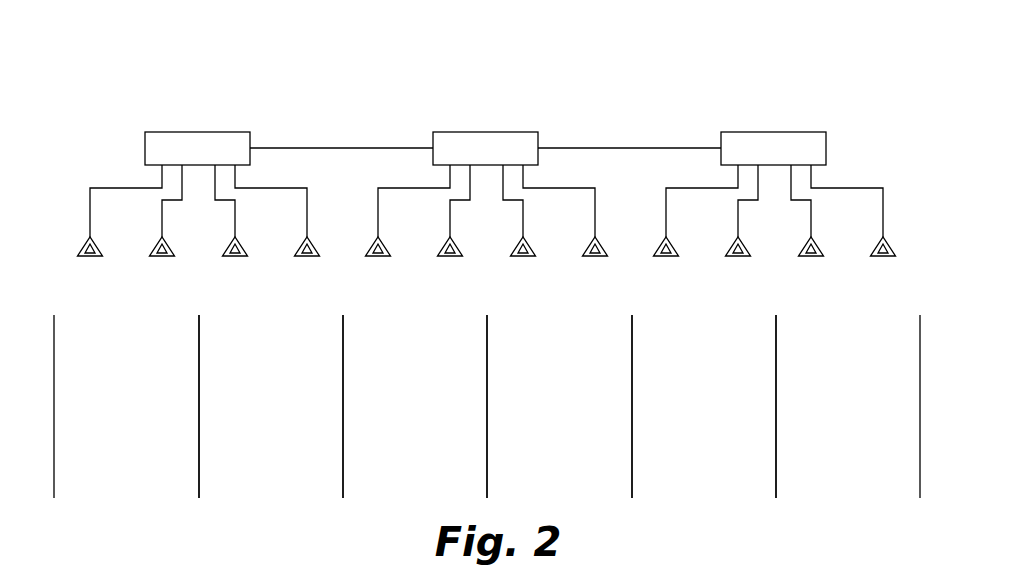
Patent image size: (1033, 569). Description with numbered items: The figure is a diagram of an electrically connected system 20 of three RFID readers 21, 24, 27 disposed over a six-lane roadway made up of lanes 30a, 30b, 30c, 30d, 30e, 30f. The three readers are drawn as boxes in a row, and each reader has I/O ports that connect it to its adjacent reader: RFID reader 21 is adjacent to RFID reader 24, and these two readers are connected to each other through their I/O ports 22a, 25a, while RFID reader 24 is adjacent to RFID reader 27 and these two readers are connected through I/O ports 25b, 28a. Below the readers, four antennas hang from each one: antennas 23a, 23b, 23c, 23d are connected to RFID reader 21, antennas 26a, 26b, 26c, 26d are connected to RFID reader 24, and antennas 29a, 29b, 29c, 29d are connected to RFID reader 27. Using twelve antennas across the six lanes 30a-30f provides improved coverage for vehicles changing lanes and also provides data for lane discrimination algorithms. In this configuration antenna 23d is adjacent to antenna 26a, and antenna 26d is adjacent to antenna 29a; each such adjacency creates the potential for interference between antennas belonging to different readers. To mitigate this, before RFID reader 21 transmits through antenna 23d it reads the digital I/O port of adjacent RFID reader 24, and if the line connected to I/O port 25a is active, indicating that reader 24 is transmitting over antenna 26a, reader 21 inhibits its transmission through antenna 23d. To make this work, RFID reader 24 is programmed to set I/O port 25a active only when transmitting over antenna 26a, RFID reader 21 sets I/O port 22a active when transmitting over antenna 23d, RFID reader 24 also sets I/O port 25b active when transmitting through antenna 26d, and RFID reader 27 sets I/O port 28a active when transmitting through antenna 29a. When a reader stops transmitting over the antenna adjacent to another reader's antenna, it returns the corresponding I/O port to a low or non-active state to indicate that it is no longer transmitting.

The electrically connected system 20 is at (817, 65).
The RFID reader 21 is at (190, 141).
The I/O port 22a is at (252, 147).
The antenna 23a is at (90, 257).
The antenna 23b is at (162, 257).
The antenna 23c is at (235, 257).
The antenna 23d is at (307, 257).
The RFID reader 24 is at (489, 141).
The I/O port 25a is at (432, 148).
The I/O port 25b is at (539, 148).
The antenna 26a is at (378, 257).
The antenna 26b is at (450, 257).
The antenna 26c is at (523, 257).
The antenna 26d is at (595, 257).
The RFID reader 27 is at (770, 142).
The I/O port 28a is at (720, 148).
The antenna 29a is at (666, 257).
The antenna 29b is at (738, 257).
The antenna 29c is at (811, 257).
The antenna 29d is at (883, 257).
The roadway lane 30a is at (108, 417).
The roadway lane 30b is at (248, 417).
The roadway lane 30c is at (388, 417).
The roadway lane 30d is at (536, 417).
The roadway lane 30e is at (681, 417).
The roadway lane 30f is at (826, 417).